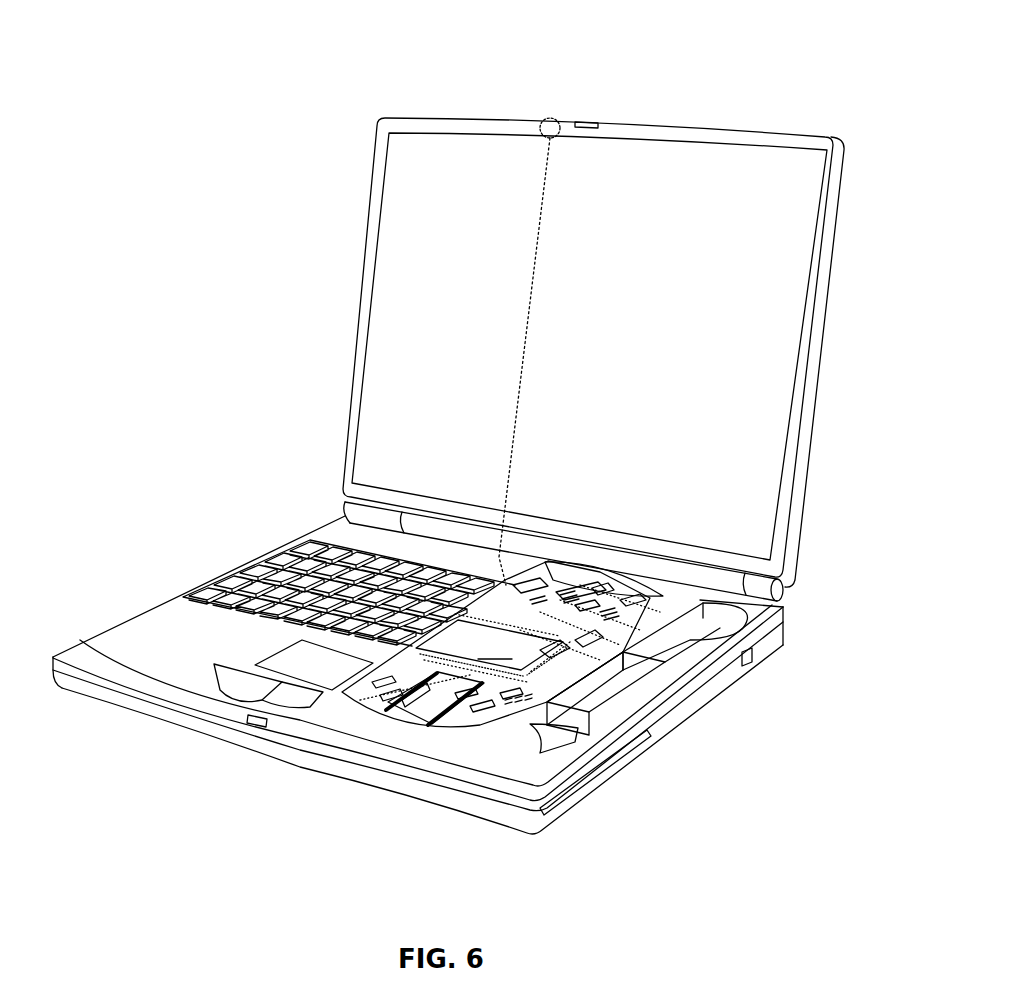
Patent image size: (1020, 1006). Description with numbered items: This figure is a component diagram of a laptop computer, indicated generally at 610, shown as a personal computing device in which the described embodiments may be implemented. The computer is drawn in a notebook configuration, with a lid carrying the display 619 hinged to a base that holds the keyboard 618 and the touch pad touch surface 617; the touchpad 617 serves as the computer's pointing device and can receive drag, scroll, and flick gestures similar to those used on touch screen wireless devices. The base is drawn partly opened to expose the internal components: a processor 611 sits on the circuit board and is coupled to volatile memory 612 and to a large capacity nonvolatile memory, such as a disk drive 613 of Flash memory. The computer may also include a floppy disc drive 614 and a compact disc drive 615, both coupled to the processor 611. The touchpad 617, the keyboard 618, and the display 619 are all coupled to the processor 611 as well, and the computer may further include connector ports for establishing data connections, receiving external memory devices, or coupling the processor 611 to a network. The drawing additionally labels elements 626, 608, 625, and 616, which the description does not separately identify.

The portable computer 610 is at (748, 113).
The display 619 is at (778, 518).
The camera 626 is at (543, 120).
The hinge 608 is at (783, 597).
The keyboard 618 is at (230, 584).
The touch pad touch surface 617 is at (278, 666).
The processor 611 is at (493, 648).
The volatile memory 612 is at (437, 710).
The disk drive 613 is at (552, 737).
The floppy disc drive 614 is at (622, 688).
The circuit board 625 is at (612, 633).
The connector 616 is at (602, 622).
The compact disc (CD) drive 615 is at (690, 633).